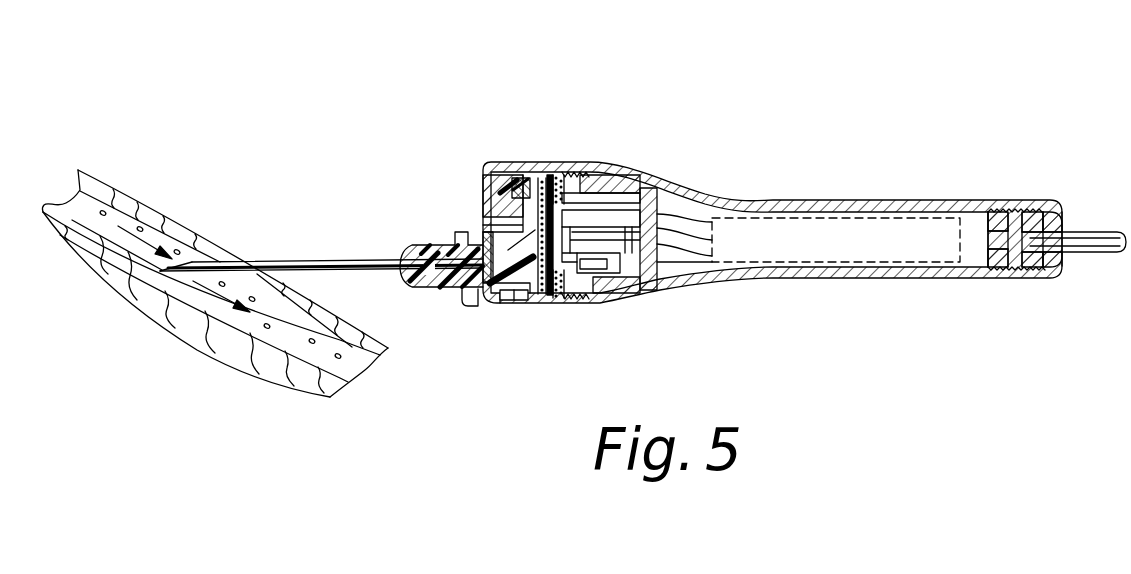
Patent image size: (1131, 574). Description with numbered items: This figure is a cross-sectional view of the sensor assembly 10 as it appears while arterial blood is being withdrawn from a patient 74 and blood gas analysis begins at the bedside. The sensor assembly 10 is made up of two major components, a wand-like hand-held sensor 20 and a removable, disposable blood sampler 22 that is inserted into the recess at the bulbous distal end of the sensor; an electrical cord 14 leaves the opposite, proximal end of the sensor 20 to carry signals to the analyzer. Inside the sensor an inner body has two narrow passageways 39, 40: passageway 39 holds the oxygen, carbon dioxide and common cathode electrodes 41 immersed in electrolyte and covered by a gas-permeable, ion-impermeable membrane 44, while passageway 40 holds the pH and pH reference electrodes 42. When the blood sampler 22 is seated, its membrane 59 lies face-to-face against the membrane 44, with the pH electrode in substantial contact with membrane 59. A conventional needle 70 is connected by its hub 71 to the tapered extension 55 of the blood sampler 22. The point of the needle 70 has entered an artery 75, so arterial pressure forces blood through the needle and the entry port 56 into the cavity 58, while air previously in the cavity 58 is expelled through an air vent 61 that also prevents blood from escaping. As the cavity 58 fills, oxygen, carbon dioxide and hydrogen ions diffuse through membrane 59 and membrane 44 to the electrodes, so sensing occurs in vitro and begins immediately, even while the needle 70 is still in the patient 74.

The sensor assembly 10 is at (767, 119).
The electrical cord 14 is at (1094, 236).
The sensor 20 is at (838, 206).
The blood sampler 22 is at (483, 224).
The passageway 39 is at (630, 240).
The passageway 40 is at (590, 213).
The electrodes 41 is at (570, 237).
The electrodes 42 is at (563, 212).
The gas-permeable, ion-impermeable membrane 44 is at (543, 296).
The tapered extension 55 is at (470, 290).
The entry port 56 is at (493, 303).
The cavity 58 is at (536, 194).
The membrane 59 is at (556, 197).
The air vent 61 is at (521, 181).
The needle 70 is at (293, 262).
The hub 71 is at (425, 251).
The patient 74 is at (101, 184).
The artery 75 is at (152, 237).